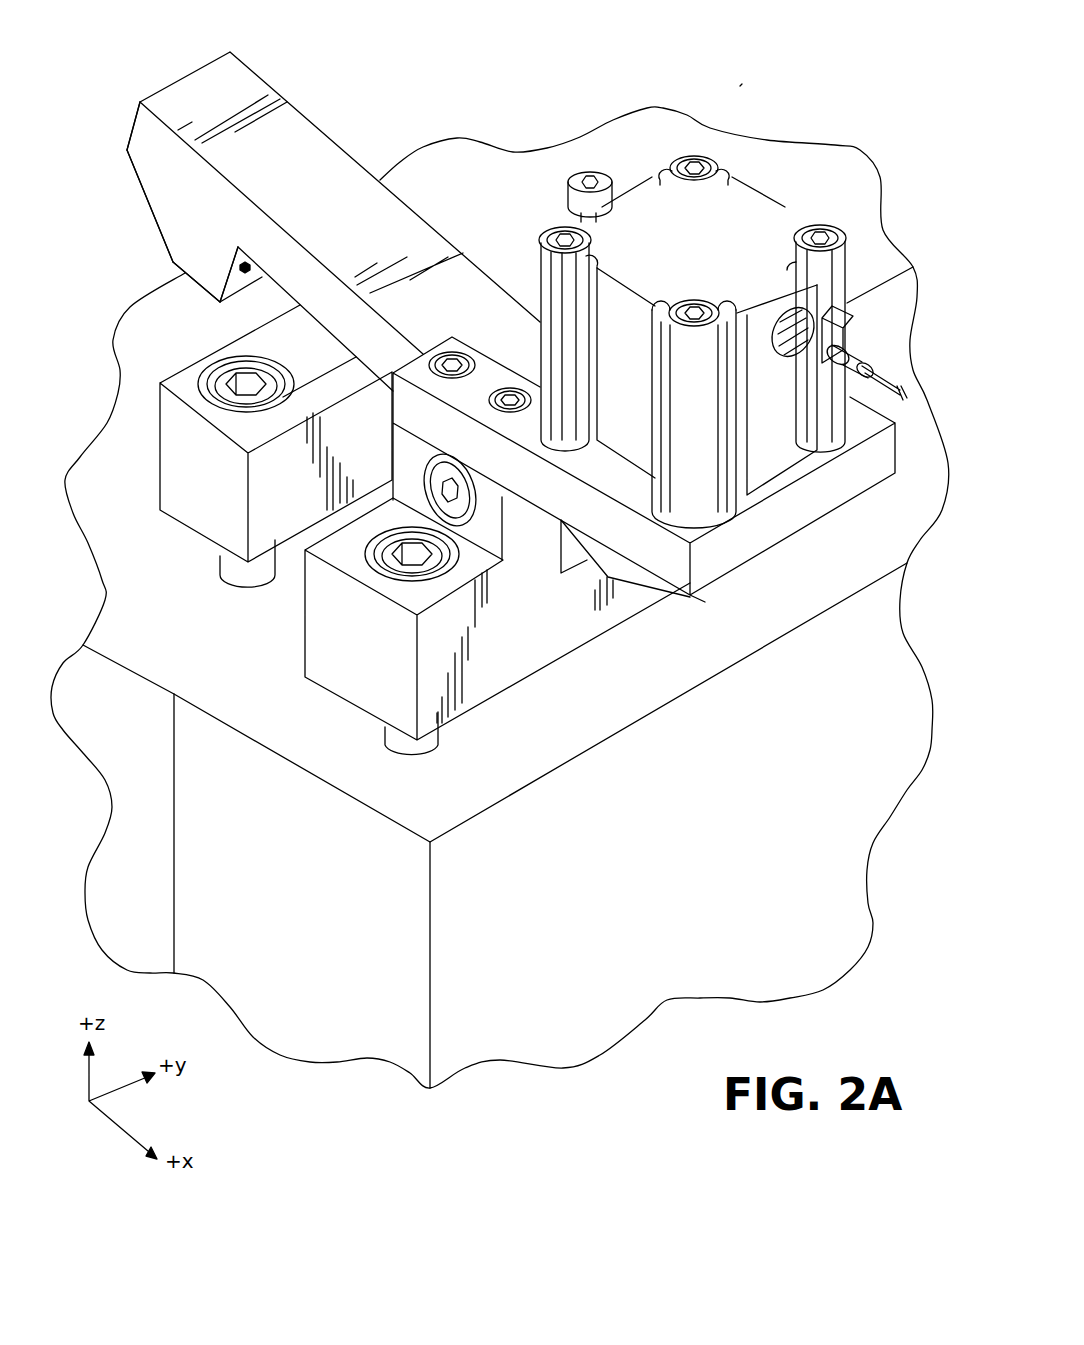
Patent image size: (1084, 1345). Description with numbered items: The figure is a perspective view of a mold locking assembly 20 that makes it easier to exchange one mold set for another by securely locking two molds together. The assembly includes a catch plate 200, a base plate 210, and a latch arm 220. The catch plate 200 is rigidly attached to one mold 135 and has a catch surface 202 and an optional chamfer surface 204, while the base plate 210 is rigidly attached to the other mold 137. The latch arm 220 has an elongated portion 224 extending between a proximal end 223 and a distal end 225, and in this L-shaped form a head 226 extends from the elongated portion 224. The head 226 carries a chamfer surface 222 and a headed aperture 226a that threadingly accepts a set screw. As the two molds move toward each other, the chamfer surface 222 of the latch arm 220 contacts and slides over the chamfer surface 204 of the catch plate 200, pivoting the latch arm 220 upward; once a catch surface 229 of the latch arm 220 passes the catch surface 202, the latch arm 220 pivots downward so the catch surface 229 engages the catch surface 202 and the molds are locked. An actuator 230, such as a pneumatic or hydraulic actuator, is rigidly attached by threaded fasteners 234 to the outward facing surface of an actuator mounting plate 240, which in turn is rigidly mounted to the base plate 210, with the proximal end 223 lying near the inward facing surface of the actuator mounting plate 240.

The mold locking assembly 20 is at (740, 85).
The mold 135 is at (131, 732).
The mold 137 is at (311, 934).
The catch plate 200 is at (150, 480).
The catch surface 202 is at (160, 372).
The chamfer surface 204 is at (247, 435).
The base plate 210 is at (355, 673).
The latch arm 220 is at (321, 121).
The chamfer surface 222 is at (147, 202).
The proximal end 223 is at (765, 575).
The elongated portion 224 is at (346, 219).
The distal end 225 is at (187, 72).
The head 226 is at (178, 233).
The headed aperture 226a is at (222, 298).
The catch surface 229 is at (237, 288).
The actuator 230 is at (768, 197).
The threaded fasteners 234 is at (867, 367).
The actuator mounting plate 240 is at (909, 457).